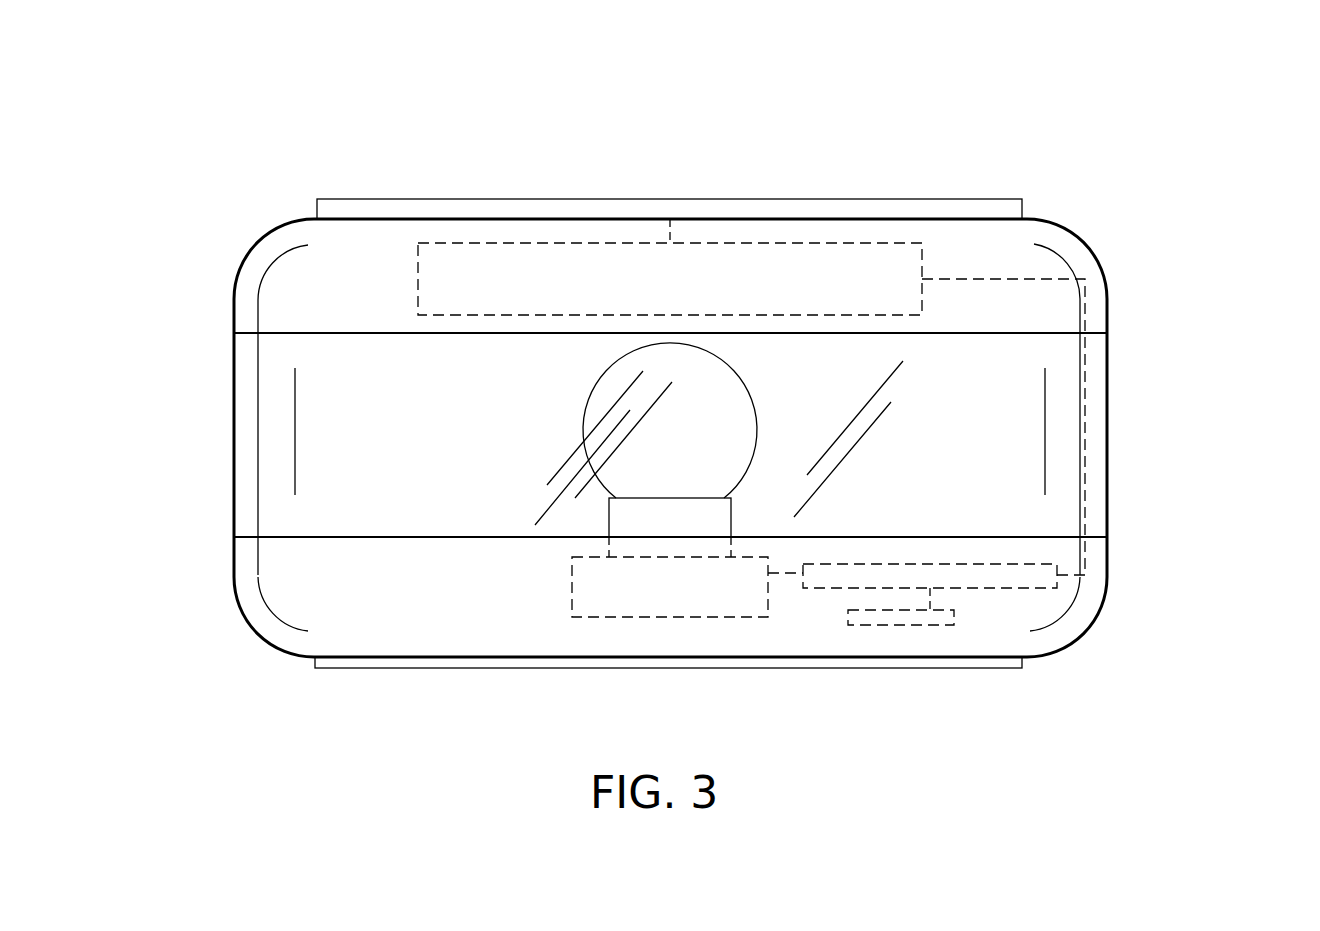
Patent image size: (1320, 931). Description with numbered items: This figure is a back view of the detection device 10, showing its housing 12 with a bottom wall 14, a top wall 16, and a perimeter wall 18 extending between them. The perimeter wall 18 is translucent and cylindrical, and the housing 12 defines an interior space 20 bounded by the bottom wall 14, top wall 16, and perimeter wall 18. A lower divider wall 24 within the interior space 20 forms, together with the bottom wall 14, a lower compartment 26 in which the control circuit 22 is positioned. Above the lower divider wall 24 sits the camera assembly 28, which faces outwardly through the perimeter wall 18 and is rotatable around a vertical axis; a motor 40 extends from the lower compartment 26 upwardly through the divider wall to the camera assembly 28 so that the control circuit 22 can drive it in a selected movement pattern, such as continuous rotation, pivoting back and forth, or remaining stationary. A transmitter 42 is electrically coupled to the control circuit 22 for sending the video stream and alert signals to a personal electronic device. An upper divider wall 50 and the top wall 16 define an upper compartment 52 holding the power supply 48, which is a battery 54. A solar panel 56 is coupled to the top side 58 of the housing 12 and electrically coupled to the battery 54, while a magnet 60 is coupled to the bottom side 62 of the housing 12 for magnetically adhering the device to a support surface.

The detection device 10 is at (1075, 133).
The housing 12 is at (1185, 441).
The bottom wall 14 is at (250, 587).
The top wall 16 is at (267, 250).
The perimeter wall 18 is at (282, 457).
The interior space 20 is at (346, 418).
The control circuit 22 is at (1035, 588).
The lower divider wall 24 is at (406, 537).
The lower compartment 26 is at (328, 578).
The camera assembly 28 is at (800, 440).
The motor 40 is at (600, 590).
The transmitter 42 is at (900, 625).
The power supply 48 is at (896, 298).
The upper divider wall 50 is at (478, 333).
The upper compartment 52 is at (368, 316).
The battery 54 is at (805, 290).
The solar panel 56 is at (541, 199).
The top side 58 is at (338, 222).
The magnet 60 is at (463, 668).
The bottom side 62 is at (388, 657).